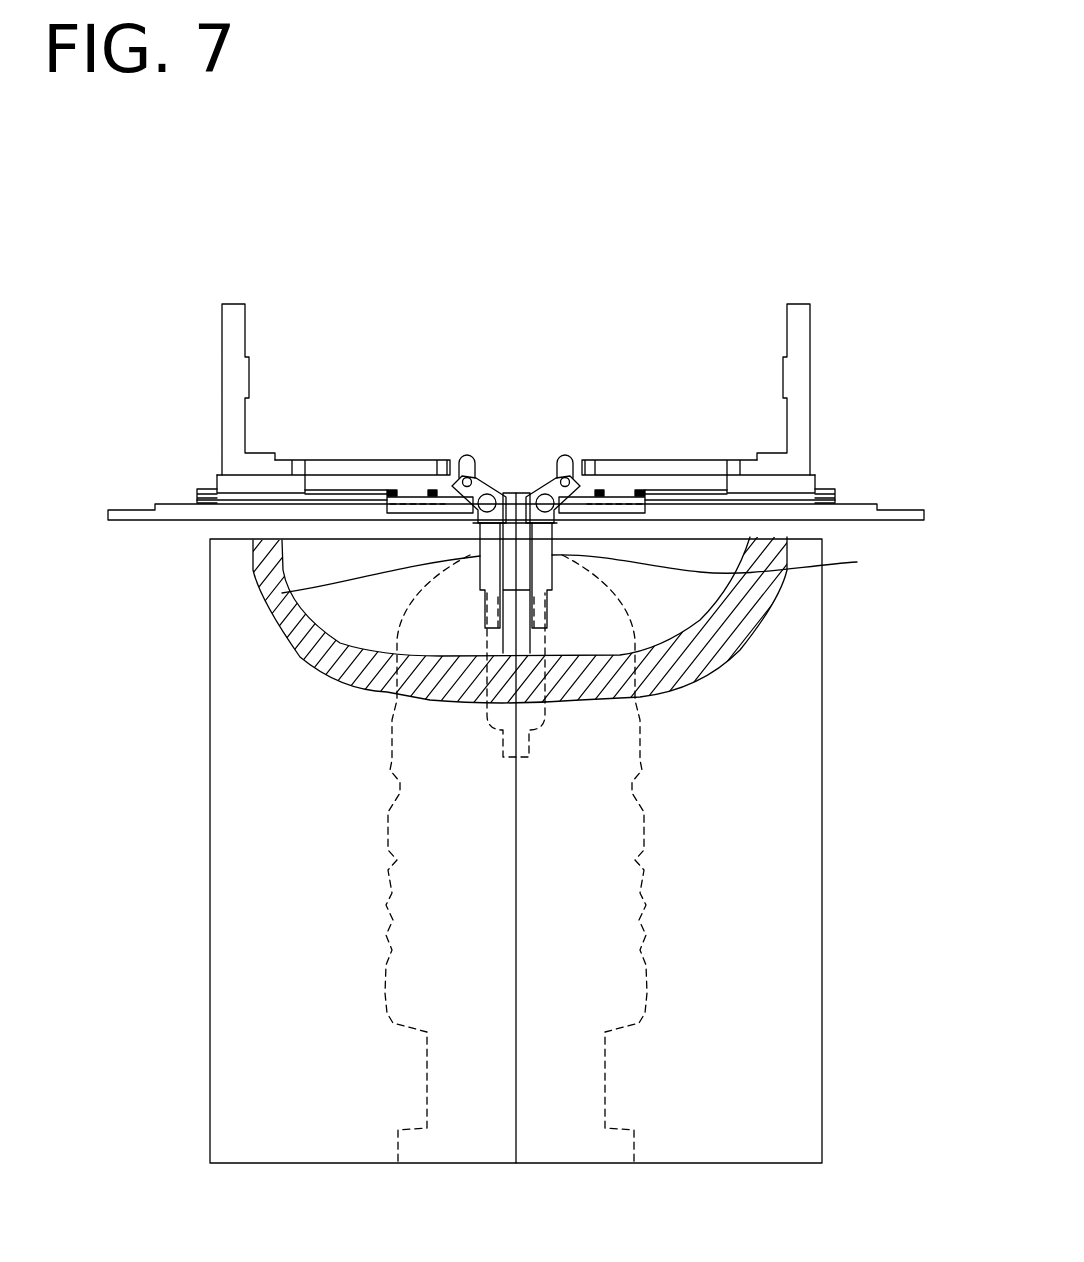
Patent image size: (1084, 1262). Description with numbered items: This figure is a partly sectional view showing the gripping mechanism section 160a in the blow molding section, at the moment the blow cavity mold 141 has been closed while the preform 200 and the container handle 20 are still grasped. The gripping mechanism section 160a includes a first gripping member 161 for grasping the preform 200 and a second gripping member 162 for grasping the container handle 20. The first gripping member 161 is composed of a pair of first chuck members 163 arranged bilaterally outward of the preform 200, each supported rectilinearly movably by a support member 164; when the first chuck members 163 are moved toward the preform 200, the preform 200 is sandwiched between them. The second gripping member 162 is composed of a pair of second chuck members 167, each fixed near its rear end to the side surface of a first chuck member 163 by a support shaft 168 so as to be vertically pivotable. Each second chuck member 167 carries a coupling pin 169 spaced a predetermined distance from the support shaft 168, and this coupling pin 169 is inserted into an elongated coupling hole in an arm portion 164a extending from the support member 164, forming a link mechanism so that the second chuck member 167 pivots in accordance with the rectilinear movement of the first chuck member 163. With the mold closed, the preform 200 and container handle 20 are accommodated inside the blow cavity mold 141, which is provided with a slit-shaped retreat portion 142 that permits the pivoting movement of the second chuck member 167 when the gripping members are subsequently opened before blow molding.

The gripping mechanism section 160a is at (718, 206).
The support member 164 is at (238, 340).
The arm portion 164a is at (408, 465).
The first chuck member 163 is at (516, 447).
The first gripping member 161 is at (348, 512).
The second gripping member 162 is at (530, 547).
The second chuck member 167 is at (310, 592).
The coupling pin 169 is at (465, 457).
The support shaft 168 is at (488, 483).
The retreat portion 142 is at (700, 590).
The blow cavity mold 141 is at (783, 942).
The preform 200 is at (392, 690).
The container handle 20 is at (520, 655).